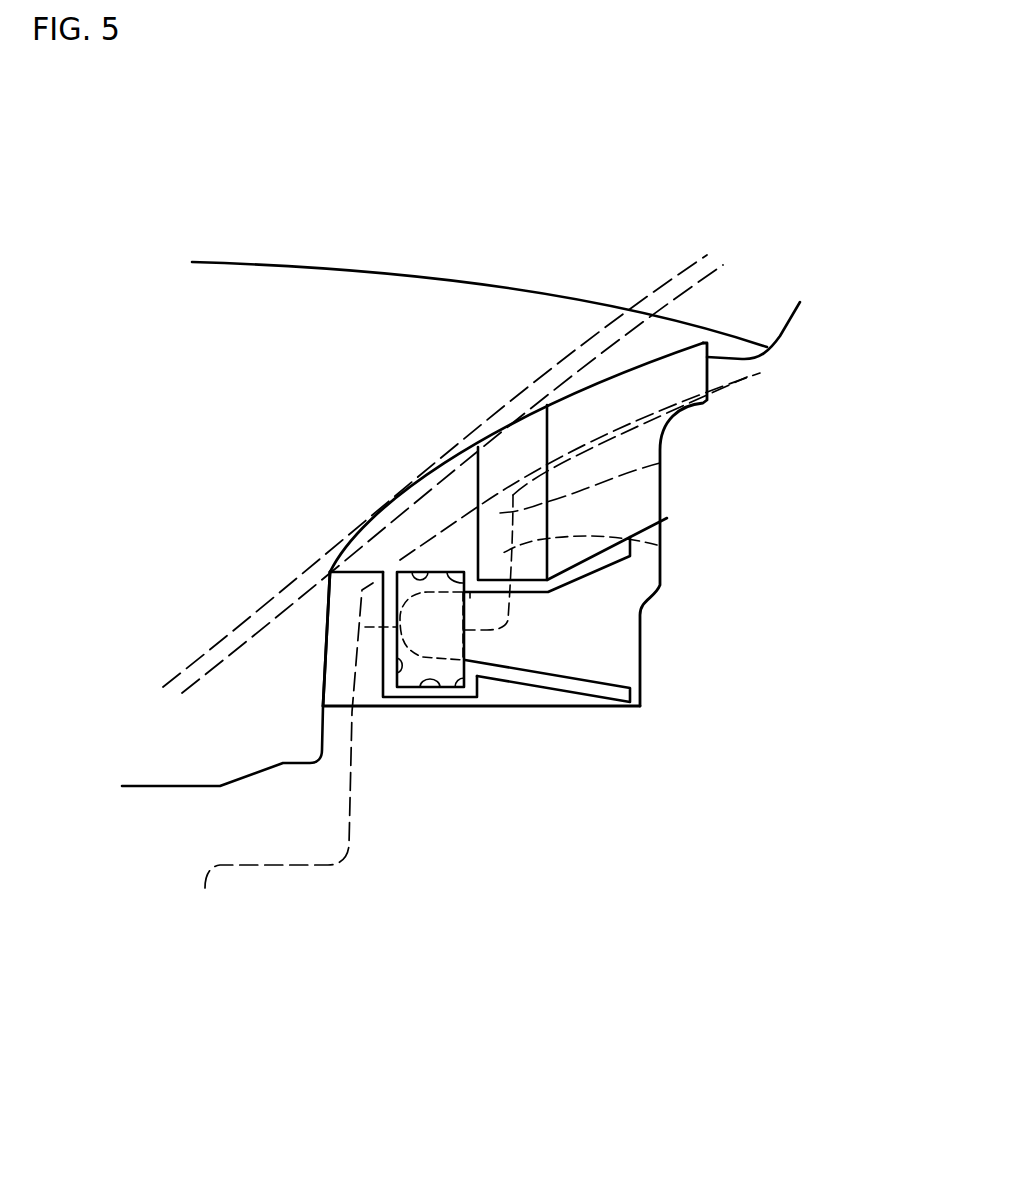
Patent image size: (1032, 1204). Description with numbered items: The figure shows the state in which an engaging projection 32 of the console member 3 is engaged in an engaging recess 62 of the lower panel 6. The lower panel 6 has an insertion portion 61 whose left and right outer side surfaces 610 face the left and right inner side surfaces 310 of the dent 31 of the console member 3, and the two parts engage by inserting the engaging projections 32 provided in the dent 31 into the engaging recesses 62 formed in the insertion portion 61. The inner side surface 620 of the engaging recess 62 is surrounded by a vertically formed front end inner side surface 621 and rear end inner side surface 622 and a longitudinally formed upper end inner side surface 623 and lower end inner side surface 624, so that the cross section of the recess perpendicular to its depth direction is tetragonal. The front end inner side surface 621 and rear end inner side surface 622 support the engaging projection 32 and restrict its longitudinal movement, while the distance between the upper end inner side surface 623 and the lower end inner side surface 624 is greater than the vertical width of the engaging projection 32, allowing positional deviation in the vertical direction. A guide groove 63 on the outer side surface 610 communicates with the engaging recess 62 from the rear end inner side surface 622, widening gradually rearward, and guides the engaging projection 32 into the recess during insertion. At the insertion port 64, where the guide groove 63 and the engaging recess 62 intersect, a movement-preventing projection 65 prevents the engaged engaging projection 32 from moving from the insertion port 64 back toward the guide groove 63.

The console member 3 is at (295, 868).
The dent 31 is at (657, 545).
The inner side surface 310 is at (660, 463).
The engaging projection 32 is at (437, 636).
The lower panel 6 is at (162, 788).
The insertion portion 61 is at (243, 740).
The outer side surface 610 is at (377, 699).
The engaging recess 62 is at (300, 527).
The inner side surface 620 is at (446, 572).
The front end inner side surface 621 is at (397, 673).
The rear end inner side surface 622 is at (457, 688).
The upper end inner side surface 623 is at (422, 583).
The lower end inner side surface 624 is at (438, 688).
The guide groove 63 is at (580, 660).
The insertion port 64 is at (463, 648).
The movement-preventing projection 65 is at (468, 602).